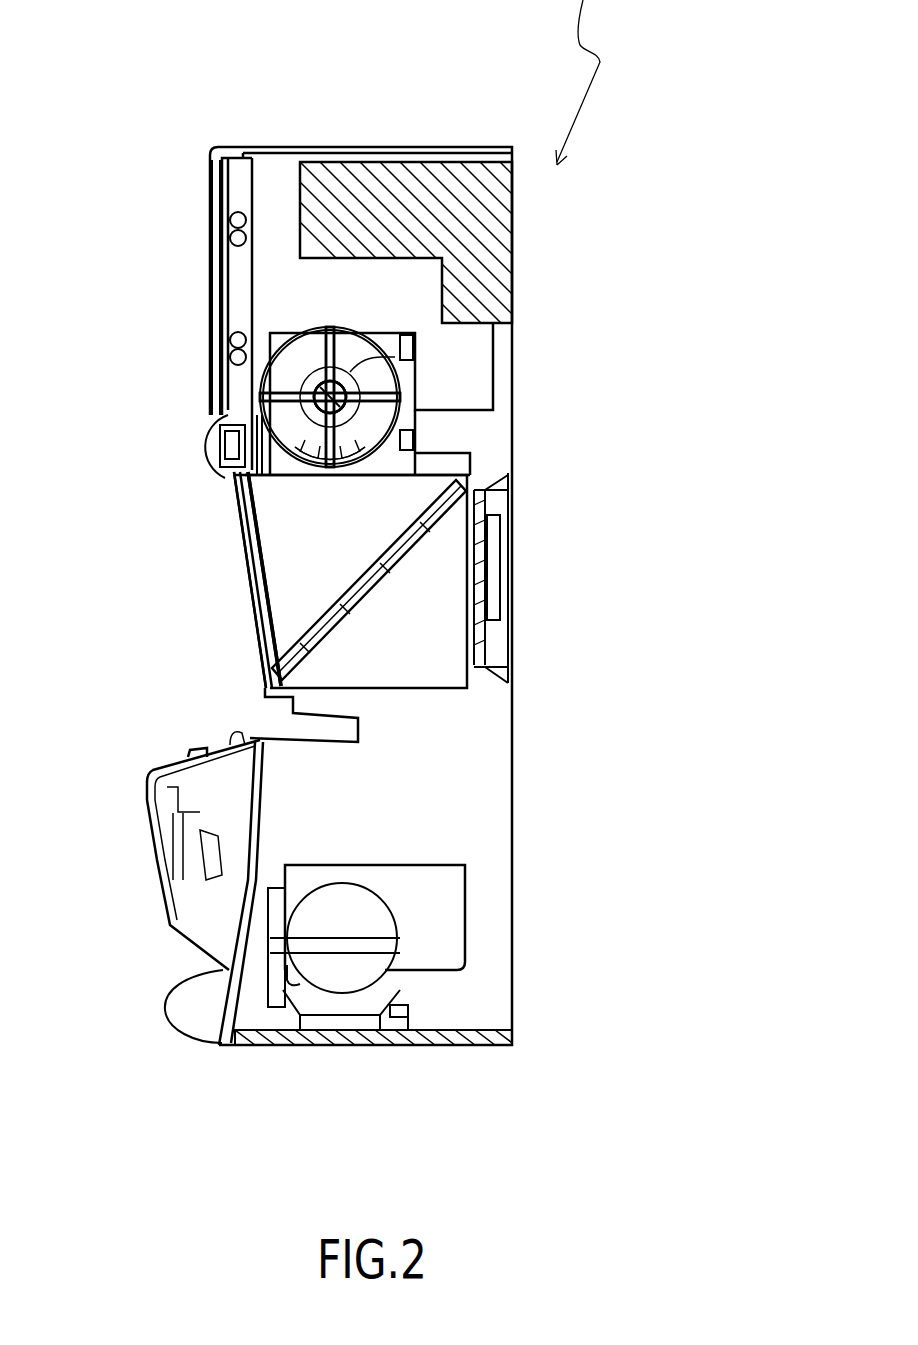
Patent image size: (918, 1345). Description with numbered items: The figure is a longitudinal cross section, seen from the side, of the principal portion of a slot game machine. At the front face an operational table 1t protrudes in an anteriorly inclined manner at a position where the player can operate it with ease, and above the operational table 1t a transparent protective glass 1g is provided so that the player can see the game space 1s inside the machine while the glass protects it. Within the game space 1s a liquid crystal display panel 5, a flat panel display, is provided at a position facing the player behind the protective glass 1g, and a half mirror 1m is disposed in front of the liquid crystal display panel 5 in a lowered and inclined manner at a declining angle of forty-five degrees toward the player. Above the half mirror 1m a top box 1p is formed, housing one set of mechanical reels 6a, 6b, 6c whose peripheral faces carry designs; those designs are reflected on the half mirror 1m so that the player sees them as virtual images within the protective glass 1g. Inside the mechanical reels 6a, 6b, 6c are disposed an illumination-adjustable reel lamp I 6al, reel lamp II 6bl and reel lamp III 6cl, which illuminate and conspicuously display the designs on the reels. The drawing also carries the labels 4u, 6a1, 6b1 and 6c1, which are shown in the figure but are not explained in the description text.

The top box 1p is at (213, 267).
The half mirror 1m is at (353, 578).
The protective glass 1g is at (247, 593).
The game space 1s is at (368, 518).
The operational table 1t is at (220, 743).
The guide lip 4u is at (177, 985).
The liquid crystal display panel 5 is at (470, 570).
The mechanical reel 6a is at (395, 385).
The mechanical reel 6b is at (486, 397).
The mechanical reel 6c is at (441, 411).
The lens holder 6a1 is at (350, 440).
The lens holder 6b1 is at (531, 423).
The lens holder 6c1 is at (519, 482).
The reel lamp I 6al is at (523, 465).
The reel lamp II 6bl is at (406, 347).
The reel lamp III 6cl is at (406, 440).